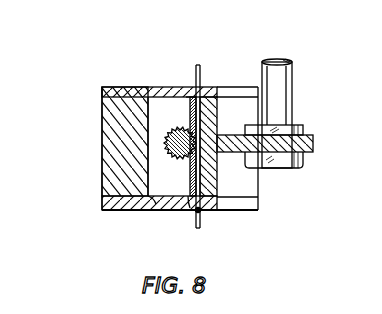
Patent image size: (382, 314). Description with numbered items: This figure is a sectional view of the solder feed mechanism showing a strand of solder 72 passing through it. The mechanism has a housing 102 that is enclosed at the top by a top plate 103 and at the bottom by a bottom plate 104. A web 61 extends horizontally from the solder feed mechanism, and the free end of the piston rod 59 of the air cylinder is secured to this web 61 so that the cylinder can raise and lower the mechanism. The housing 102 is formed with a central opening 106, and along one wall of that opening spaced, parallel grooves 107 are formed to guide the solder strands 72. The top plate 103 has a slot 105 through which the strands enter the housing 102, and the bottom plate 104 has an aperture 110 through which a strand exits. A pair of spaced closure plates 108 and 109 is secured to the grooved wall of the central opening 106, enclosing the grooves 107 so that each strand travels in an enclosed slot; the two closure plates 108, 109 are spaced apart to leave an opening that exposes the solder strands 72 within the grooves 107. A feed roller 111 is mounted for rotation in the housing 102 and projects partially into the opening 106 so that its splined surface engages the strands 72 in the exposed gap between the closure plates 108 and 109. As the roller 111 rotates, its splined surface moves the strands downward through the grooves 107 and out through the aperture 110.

The piston rod 59 is at (290, 82).
The web 61 is at (310, 146).
The solder strand 72 is at (201, 72).
The housing 102 is at (104, 116).
The top plate 103 is at (113, 87).
The bottom plate 104 is at (108, 210).
The slot 105 is at (193, 97).
The central opening 106 is at (155, 203).
The grooves 107 is at (206, 110).
The closure plate 108 is at (190, 106).
The closure plate 109 is at (190, 208).
The aperture 110 is at (201, 212).
The feed roller 111 is at (178, 128).